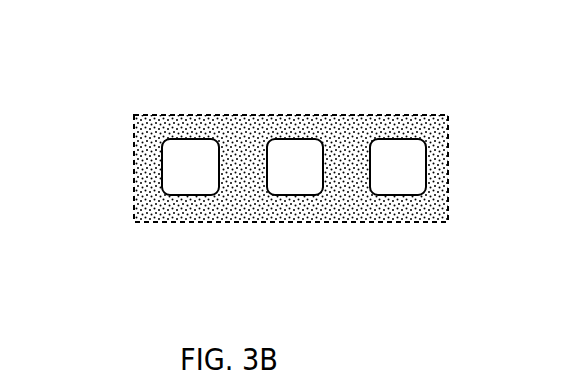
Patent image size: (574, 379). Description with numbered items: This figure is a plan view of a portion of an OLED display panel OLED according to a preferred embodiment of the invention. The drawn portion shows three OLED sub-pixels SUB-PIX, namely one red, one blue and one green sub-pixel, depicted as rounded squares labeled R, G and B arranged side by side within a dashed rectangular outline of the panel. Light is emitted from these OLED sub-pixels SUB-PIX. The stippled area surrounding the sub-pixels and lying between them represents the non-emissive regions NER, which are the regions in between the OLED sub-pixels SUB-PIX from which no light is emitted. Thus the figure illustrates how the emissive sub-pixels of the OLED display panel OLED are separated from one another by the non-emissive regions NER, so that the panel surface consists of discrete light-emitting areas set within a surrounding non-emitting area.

The OLED display panel OLED is at (106, 96).
The non-emissive region NER is at (249, 125).
The OLED sub-pixel SUB-PIX is at (392, 202).